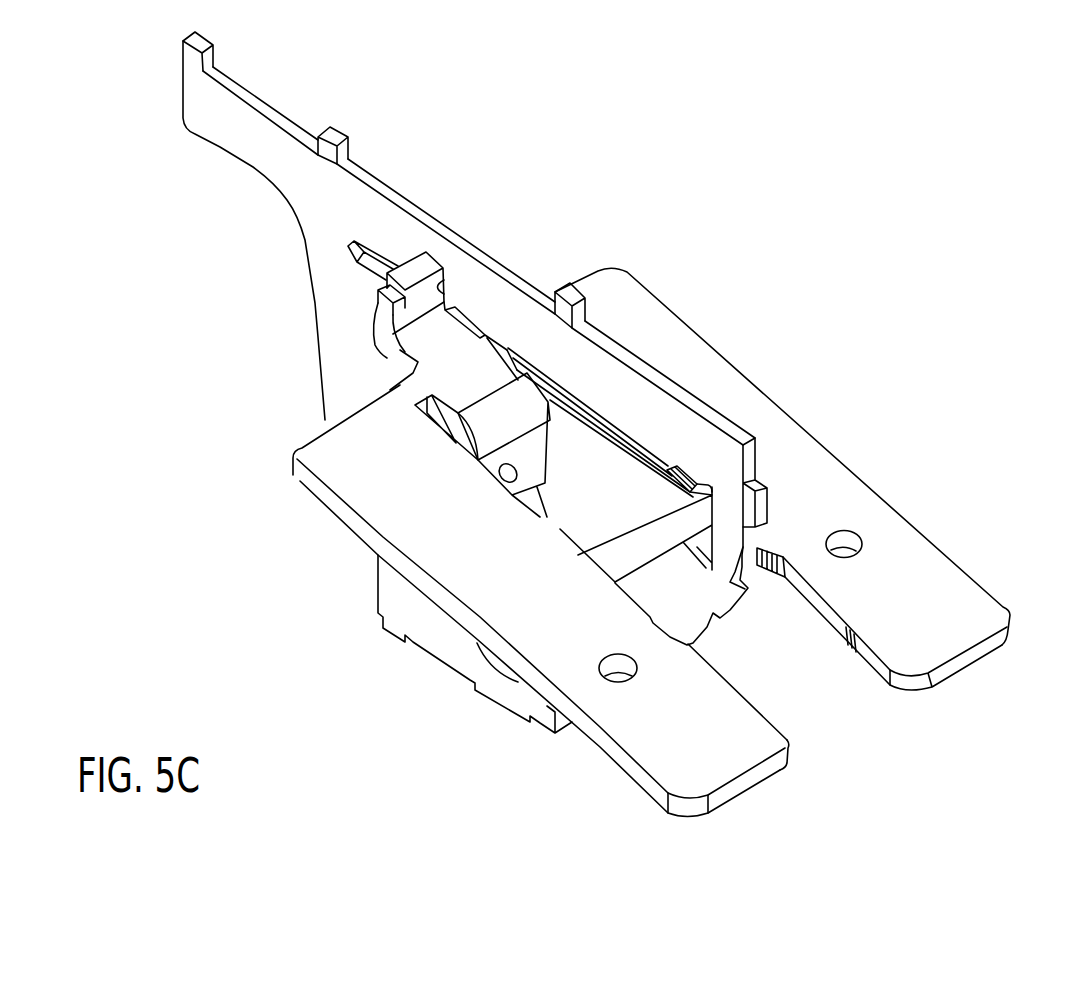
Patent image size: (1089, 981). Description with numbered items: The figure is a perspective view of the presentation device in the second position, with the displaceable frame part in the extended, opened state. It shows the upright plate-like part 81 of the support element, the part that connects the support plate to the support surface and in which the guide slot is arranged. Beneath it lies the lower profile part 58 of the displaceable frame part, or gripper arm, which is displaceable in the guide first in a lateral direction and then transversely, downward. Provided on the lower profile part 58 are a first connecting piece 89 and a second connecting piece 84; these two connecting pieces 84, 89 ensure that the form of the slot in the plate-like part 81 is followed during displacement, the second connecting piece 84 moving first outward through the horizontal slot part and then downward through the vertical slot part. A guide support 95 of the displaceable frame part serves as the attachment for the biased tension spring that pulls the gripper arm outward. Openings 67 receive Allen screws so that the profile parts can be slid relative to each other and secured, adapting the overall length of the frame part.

The plate-like part 81 is at (198, 108).
The openings 67 is at (843, 537).
The lower profile part 58 is at (323, 493).
The first connecting piece 89 is at (457, 360).
The guide support 95 is at (437, 300).
The second connecting piece 84 is at (667, 530).